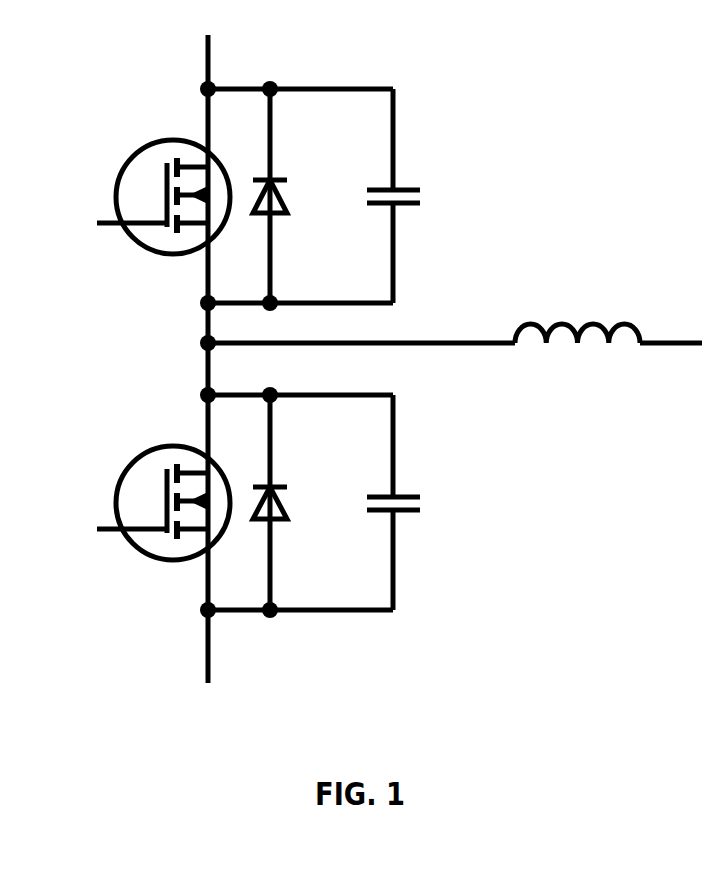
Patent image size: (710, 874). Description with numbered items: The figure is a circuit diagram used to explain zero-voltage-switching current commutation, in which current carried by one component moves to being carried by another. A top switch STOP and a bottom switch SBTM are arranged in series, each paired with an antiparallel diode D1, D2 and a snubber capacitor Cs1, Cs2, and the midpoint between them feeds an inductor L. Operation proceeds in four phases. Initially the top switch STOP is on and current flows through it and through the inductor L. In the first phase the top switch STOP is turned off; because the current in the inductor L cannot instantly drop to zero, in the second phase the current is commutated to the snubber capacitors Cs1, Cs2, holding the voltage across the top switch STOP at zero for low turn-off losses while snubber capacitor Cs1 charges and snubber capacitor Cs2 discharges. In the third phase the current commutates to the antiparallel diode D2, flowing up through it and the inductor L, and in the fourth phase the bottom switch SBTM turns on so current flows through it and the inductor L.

The top switch STOP is at (143, 185).
The bottom switch SBTM is at (146, 486).
The antiparallel diode D1 is at (300, 196).
The antiparallel diode D2 is at (296, 502).
The snubber capacitor Cs1 is at (429, 187).
The snubber capacitor Cs2 is at (429, 497).
The inductor L is at (577, 306).